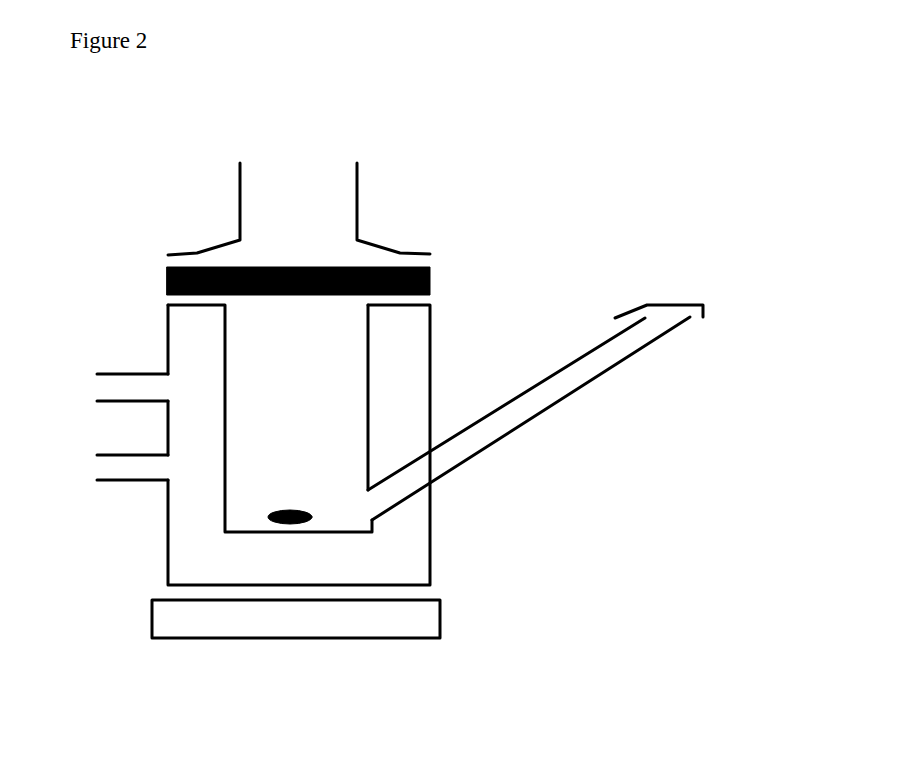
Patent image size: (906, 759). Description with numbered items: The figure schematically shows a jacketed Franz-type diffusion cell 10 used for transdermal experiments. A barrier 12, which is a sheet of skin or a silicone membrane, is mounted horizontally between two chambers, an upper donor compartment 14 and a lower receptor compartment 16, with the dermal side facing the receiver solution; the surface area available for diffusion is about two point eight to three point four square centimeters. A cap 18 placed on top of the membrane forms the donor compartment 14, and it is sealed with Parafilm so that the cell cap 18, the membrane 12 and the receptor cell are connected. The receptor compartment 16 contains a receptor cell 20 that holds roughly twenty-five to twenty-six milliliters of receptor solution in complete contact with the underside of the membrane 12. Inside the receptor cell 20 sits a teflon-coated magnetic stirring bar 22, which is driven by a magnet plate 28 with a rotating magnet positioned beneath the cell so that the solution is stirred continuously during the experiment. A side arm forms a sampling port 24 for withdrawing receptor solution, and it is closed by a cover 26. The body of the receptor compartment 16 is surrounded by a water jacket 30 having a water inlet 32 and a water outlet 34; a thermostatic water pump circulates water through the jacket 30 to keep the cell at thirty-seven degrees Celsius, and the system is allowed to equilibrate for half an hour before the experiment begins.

The diffusion cell 10 is at (470, 205).
The barrier 12 is at (435, 275).
The donor compartment 14 is at (365, 177).
The receptor compartment 16 is at (438, 520).
The cap 18 is at (357, 221).
The receptor cell 20 is at (270, 418).
The stirring bar 22 is at (313, 518).
The sampling port 24 is at (612, 363).
The cover 26 is at (675, 300).
The magnet plate 28 is at (287, 640).
The water jacket 30 is at (410, 333).
The water inlet 32 is at (90, 462).
The water outlet 34 is at (97, 383).